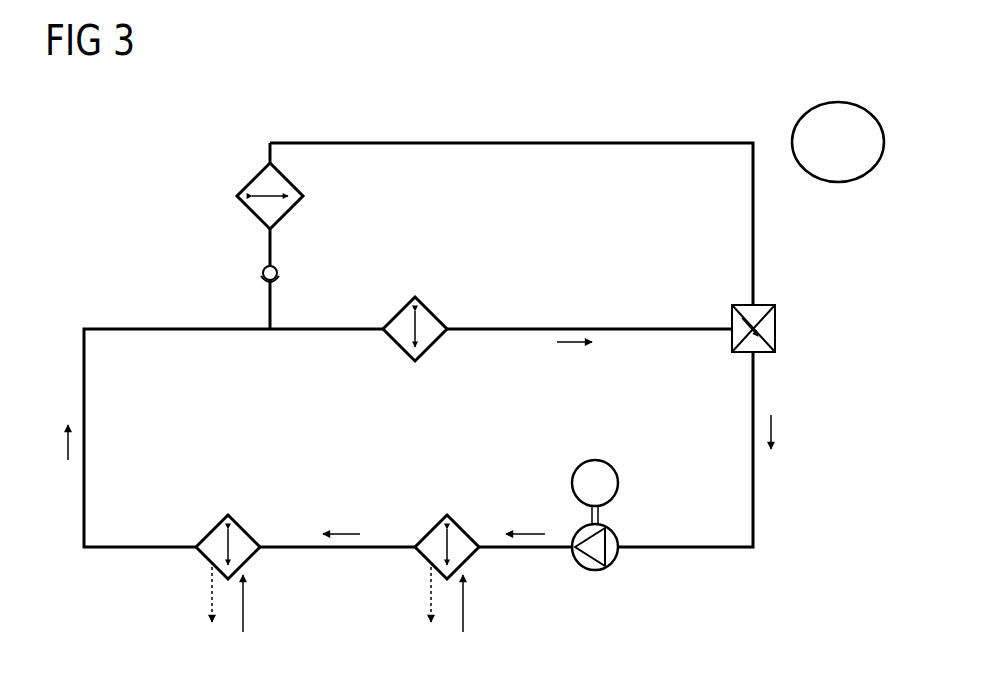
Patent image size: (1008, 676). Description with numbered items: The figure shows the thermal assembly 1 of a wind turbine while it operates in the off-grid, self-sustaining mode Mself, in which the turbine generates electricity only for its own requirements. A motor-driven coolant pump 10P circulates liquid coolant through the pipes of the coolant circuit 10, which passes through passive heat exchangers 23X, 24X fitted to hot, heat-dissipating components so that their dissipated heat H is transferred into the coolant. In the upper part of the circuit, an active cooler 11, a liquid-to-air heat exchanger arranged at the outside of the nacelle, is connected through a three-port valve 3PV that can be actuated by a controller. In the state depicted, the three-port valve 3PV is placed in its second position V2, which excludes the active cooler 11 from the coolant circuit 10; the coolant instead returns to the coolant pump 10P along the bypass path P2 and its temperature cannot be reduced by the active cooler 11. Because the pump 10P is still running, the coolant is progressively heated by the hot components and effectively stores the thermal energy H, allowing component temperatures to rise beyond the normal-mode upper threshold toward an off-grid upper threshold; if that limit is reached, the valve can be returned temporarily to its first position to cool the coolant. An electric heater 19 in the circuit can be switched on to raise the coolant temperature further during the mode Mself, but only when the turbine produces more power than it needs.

The thermal assembly 1 is at (732, 103).
The coolant circuit 10 is at (158, 327).
The coolant pump 10P is at (593, 571).
The active cooler 11 is at (250, 177).
The electric heater 19 is at (437, 311).
The three-port valve 3PV is at (790, 290).
The second position V2 is at (721, 374).
The bypass path P2 is at (567, 343).
The passive heat exchanger 24X is at (243, 530).
The passive heat exchanger 23X is at (462, 528).
The dissipated heat H is at (243, 610).
The off-grid self-sustaining mode Mself is at (838, 142).